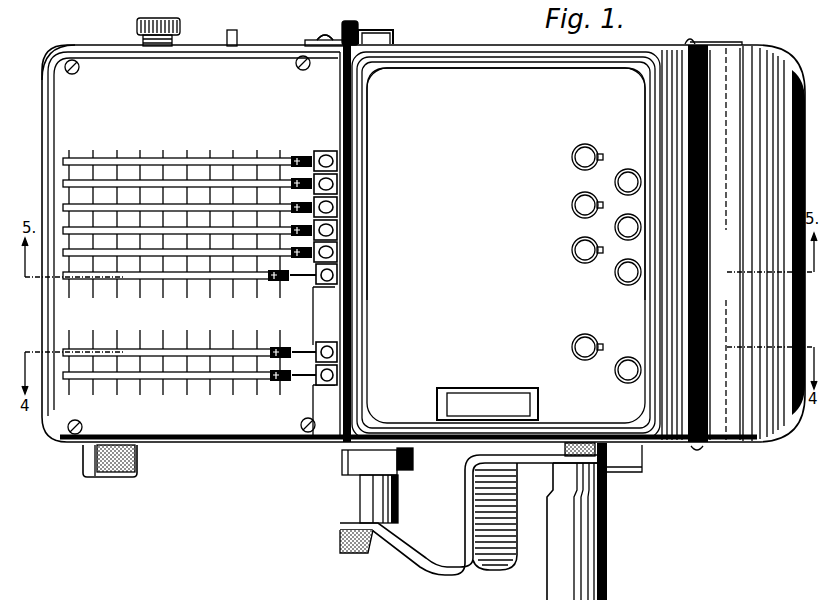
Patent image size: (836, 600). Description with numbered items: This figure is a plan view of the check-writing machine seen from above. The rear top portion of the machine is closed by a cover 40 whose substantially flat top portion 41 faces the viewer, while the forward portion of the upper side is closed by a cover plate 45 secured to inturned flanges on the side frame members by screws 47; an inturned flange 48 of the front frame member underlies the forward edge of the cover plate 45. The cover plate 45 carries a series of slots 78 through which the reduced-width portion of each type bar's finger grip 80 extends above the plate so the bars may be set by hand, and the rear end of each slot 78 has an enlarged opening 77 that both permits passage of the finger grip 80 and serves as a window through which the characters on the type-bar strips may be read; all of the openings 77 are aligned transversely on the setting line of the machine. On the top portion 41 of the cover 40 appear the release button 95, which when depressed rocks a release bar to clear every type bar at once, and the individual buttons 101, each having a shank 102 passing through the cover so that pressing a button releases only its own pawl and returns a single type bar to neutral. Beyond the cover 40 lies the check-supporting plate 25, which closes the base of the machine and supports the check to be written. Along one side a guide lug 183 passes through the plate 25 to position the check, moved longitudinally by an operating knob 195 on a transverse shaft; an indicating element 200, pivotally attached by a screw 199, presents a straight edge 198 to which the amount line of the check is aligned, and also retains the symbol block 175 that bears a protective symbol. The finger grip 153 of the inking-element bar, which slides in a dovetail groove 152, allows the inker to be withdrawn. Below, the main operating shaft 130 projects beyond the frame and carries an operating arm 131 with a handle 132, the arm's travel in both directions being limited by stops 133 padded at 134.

The check-supporting plate 25 is at (743, 246).
The cover 40 is at (440, 58).
The top portion of cover 41 is at (513, 221).
The cover plate 45 is at (180, 101).
The screws 47 is at (58, 50).
The inturned flange 48 is at (300, 425).
The enlarged opening 77 is at (327, 150).
The slot 78 is at (216, 150).
The finger grip 80 is at (298, 152).
The release button 95 is at (484, 392).
The individual buttons 101 is at (628, 169).
The shank 102 is at (601, 210).
The main operating shaft 130 is at (365, 497).
The operating arm 131 is at (448, 573).
The handle 132 is at (605, 571).
The stops 133 is at (106, 478).
The padding 134 is at (135, 455).
The dovetail groove 152 is at (400, 453).
The finger grip 153 is at (360, 464).
The symbol block 175 is at (385, 30).
The guide lug 183 is at (229, 31).
The operating knob 195 is at (138, 27).
The straight edge 198 is at (352, 21).
The screw 199 is at (329, 22).
The indicating element 200 is at (315, 37).